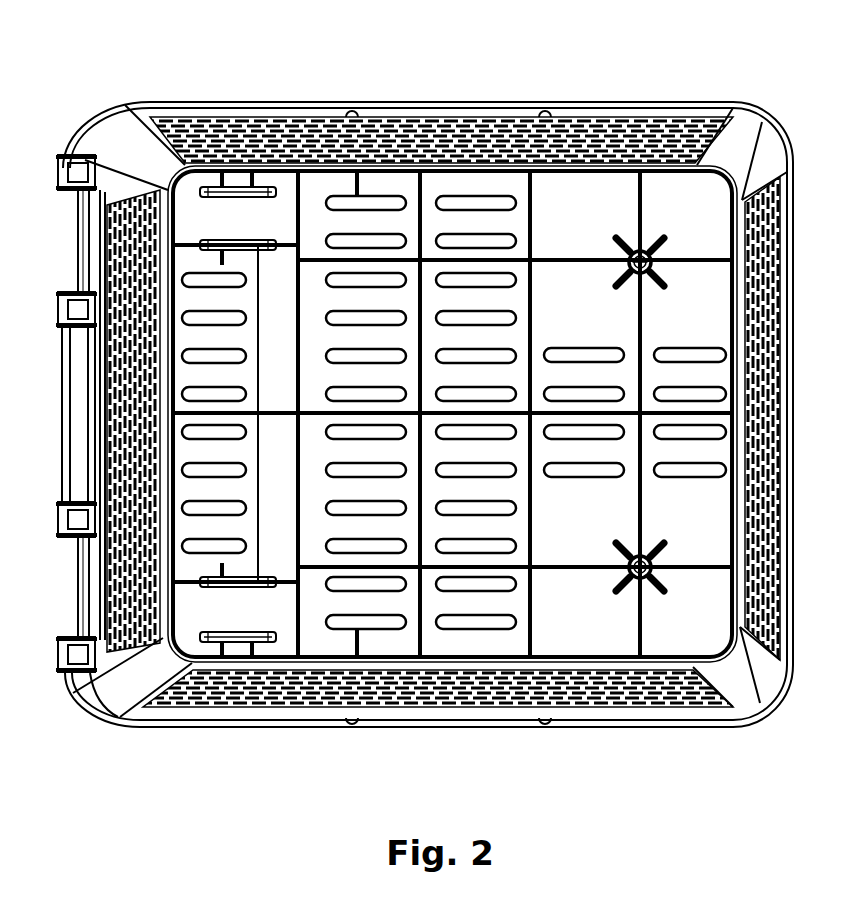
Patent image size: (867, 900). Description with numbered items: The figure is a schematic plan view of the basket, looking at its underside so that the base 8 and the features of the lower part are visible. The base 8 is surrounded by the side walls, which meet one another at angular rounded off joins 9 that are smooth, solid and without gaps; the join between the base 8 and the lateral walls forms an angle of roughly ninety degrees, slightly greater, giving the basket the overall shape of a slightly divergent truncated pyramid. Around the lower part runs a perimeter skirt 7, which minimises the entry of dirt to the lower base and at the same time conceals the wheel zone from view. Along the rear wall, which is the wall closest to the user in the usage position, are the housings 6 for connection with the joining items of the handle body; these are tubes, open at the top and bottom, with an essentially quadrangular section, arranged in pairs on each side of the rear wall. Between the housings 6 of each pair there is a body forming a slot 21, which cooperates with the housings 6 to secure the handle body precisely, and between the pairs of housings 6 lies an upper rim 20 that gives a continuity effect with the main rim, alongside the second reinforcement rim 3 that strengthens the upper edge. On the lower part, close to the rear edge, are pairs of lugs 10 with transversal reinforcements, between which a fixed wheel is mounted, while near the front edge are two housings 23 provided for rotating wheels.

The second reinforcement rim 3 is at (455, 113).
The housings 6 is at (80, 170).
The perimeter skirt 7 is at (322, 172).
The base 8 is at (577, 205).
The angular rounded off joins 9 is at (743, 677).
The lugs 10 is at (239, 645).
The upper rim 20 is at (78, 352).
The slot 21 is at (90, 244).
The housings for rotating wheels 23 is at (648, 245).